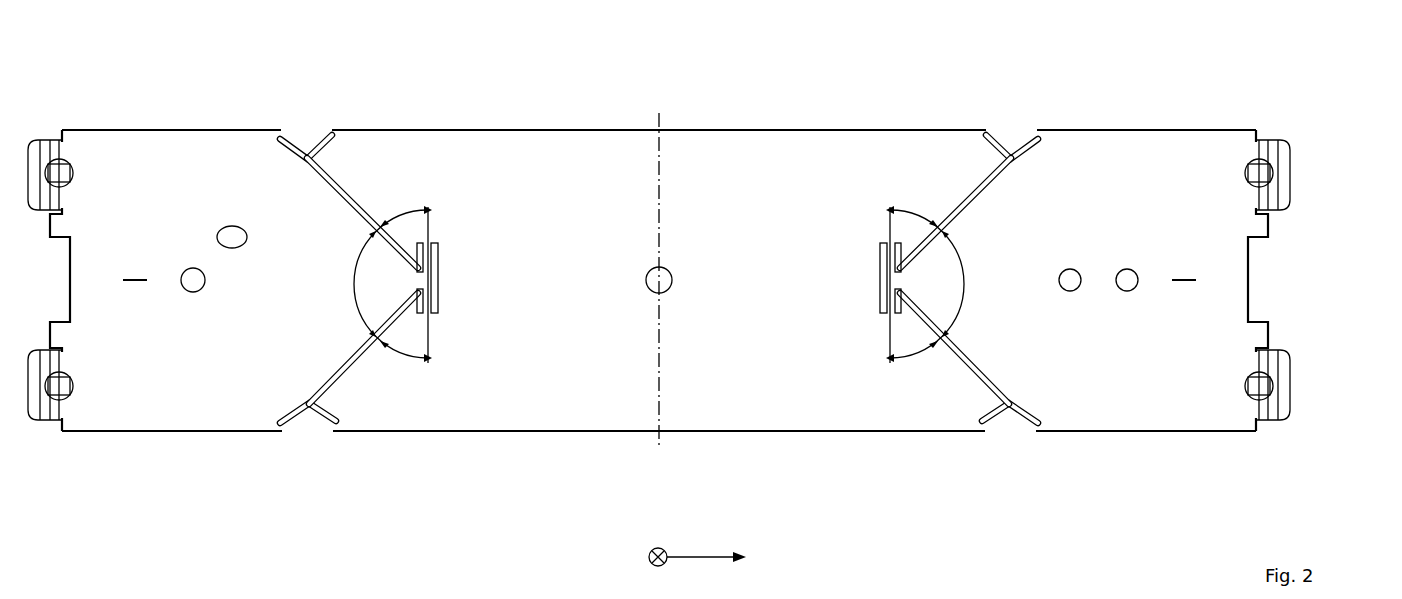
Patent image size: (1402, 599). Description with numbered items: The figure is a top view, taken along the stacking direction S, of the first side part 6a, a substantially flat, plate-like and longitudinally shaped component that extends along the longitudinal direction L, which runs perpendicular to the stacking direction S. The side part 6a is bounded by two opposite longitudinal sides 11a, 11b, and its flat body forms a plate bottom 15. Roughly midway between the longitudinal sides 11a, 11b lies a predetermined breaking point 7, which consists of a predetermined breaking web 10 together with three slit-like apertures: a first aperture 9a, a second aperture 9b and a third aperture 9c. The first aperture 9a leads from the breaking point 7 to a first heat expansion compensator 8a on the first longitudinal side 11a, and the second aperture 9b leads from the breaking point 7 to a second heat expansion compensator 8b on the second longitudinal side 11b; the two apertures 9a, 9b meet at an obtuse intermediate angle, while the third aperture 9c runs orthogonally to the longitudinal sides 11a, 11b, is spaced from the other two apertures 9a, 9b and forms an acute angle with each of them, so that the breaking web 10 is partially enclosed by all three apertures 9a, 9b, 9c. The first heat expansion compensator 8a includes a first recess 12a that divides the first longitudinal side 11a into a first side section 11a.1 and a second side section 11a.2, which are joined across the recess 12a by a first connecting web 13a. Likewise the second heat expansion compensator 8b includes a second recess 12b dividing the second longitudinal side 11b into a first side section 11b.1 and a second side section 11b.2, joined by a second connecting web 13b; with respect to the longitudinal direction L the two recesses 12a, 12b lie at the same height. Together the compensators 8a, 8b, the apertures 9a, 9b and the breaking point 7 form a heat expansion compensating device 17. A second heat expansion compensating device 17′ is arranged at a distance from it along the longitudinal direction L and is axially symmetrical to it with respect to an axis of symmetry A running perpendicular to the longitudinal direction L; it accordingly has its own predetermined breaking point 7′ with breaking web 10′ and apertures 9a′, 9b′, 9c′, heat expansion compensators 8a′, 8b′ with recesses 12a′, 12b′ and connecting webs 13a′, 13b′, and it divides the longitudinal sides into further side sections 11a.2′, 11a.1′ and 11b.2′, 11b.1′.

The first side part 6a is at (709, 276).
The predetermined breaking point 7 is at (398, 282).
The predetermined breaking point 7′ is at (922, 282).
The first heat expansion compensator 8a is at (330, 101).
The second heat expansion compensator 8b is at (332, 461).
The first heat expansion compensator 8a′ is at (988, 101).
The second heat expansion compensator 8b′ is at (989, 462).
The first aperture 9a is at (322, 188).
The second aperture 9b is at (330, 372).
The third aperture 9c is at (438, 298).
The first aperture 9a′ is at (993, 182).
The second aperture 9b′ is at (987, 367).
The third aperture 9c′ is at (880, 298).
The predetermined breaking web 10 is at (438, 262).
The predetermined breaking web 10′ is at (880, 262).
The first longitudinal side 11a is at (659, 83).
The first side section 11a.1 is at (172, 128).
The second side section 11a.2 is at (500, 128).
The second side section 11a.2′ is at (757, 128).
The first side section 11a.1′ is at (1127, 128).
The second longitudinal side 11b is at (659, 479).
The first side section 11b.1 is at (178, 433).
The second side section 11b.2 is at (507, 433).
The second side section 11b.2′ is at (763, 433).
The first side section 11b.1′ is at (1130, 433).
The first recess 12a is at (305, 135).
The first connecting web 13a is at (342, 148).
The second recess 12b is at (302, 425).
The second connecting web 13b is at (338, 410).
The first recess 12a′ is at (1013, 135).
The first connecting web 13a′ is at (976, 148).
The second recess 12b′ is at (1016, 425).
The second connecting web 13b′ is at (980, 410).
The plate bottom 15 is at (1232, 276).
The heat expansion compensating device 17 is at (421, 181).
The heat expansion compensating device 17′ is at (897, 181).
The axis of symmetry A is at (662, 140).
The stacking direction S is at (651, 565).
The longitudinal direction L is at (711, 556).